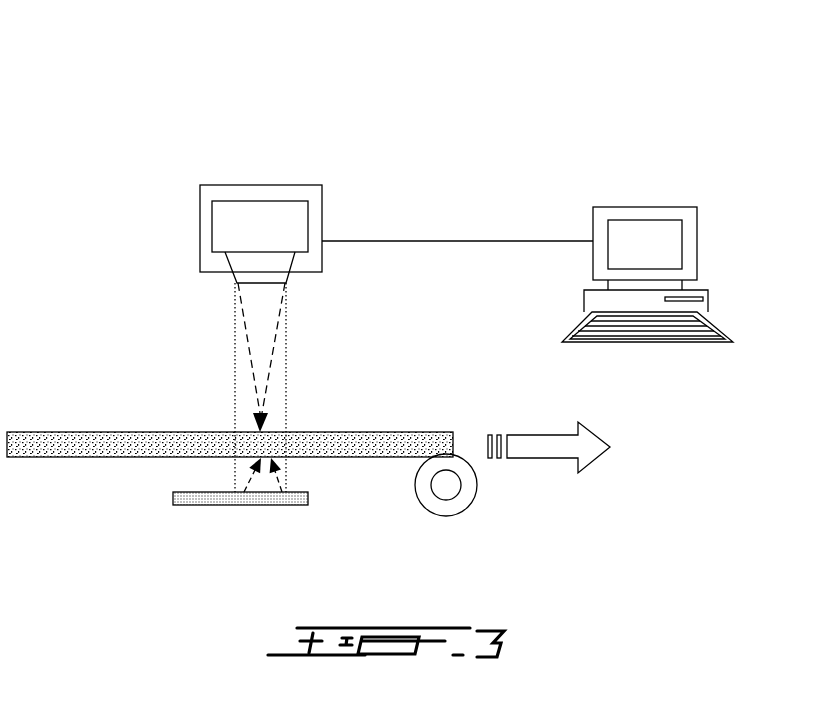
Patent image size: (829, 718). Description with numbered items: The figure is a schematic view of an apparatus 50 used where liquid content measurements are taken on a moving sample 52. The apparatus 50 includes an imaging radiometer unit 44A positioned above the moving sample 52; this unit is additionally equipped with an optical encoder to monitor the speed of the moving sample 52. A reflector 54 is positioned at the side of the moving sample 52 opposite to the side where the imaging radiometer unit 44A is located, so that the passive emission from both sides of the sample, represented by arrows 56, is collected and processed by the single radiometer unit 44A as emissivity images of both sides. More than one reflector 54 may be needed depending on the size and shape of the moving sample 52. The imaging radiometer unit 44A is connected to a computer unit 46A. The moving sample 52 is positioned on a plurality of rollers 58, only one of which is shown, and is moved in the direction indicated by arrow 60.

The apparatus 50 is at (420, 145).
The imaging radiometer unit 44A is at (208, 205).
The computer unit 46A is at (697, 243).
The moving sample 52 is at (67, 432).
The reflector 54 is at (173, 497).
The arrows representing passive emission 56 is at (287, 338).
The rollers 58 is at (460, 513).
The arrow indicating direction of movement 60 is at (526, 435).